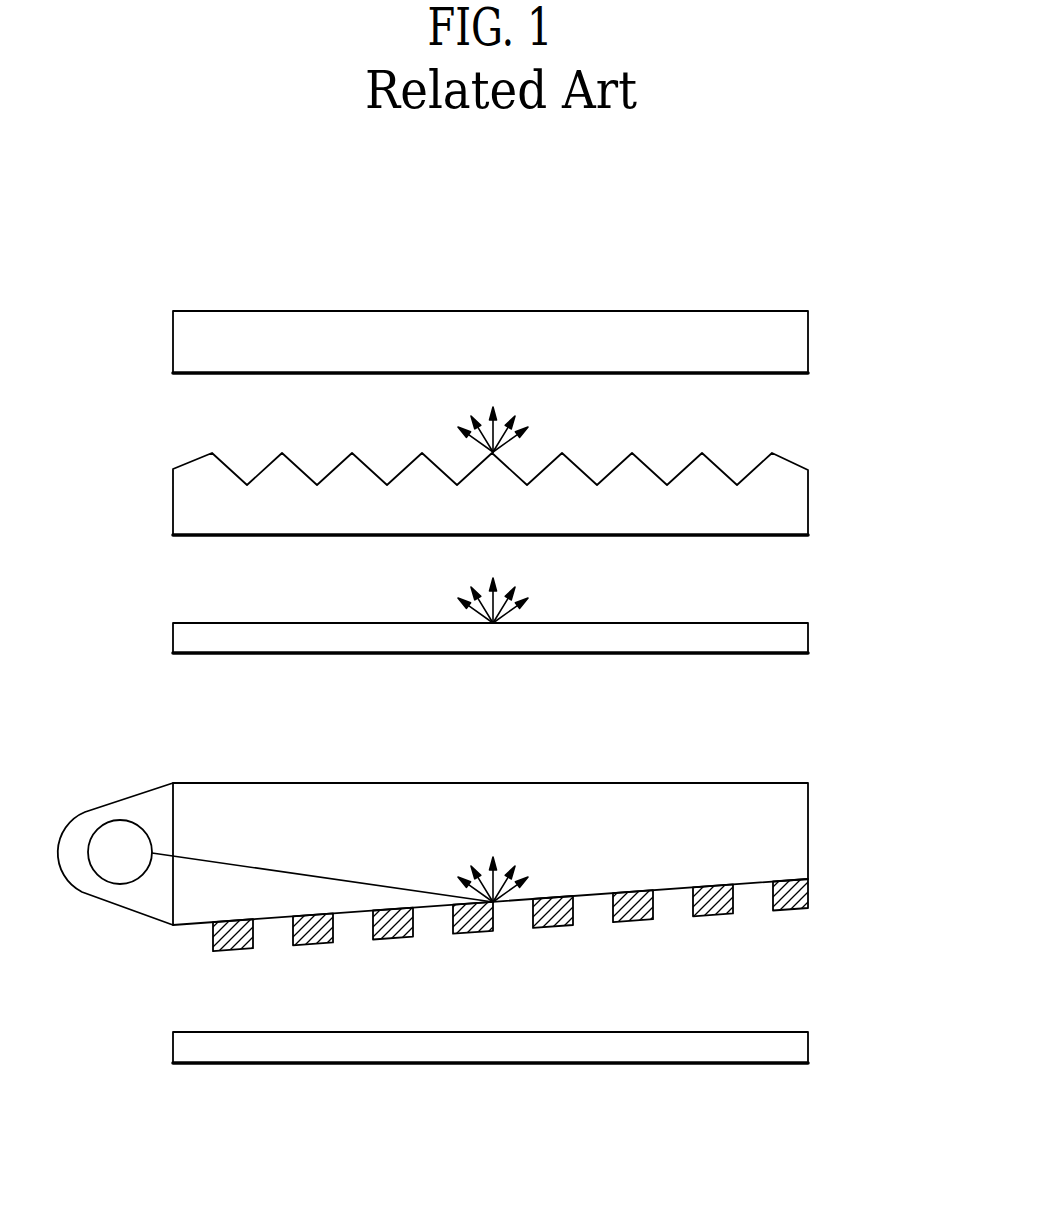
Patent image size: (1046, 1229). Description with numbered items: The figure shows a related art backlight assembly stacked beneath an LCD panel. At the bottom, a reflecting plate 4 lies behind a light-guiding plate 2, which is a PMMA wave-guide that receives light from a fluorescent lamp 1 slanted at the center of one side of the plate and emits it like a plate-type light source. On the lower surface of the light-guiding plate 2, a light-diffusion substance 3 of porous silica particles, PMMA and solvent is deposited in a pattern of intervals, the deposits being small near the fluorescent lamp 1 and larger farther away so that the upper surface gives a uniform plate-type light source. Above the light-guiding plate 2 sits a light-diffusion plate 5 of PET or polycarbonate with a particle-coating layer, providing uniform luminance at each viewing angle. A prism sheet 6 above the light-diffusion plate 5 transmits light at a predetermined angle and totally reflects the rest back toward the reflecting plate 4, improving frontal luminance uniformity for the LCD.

The element LCD is at (808, 343).
The fluorescent lamp 1 is at (115, 830).
The light-guiding plate 2 is at (803, 832).
The light-diffusion substance 3 is at (805, 895).
The reflecting plate 4 is at (808, 1047).
The light-diffusion plate 5 is at (808, 642).
The prism sheet 6 is at (808, 506).